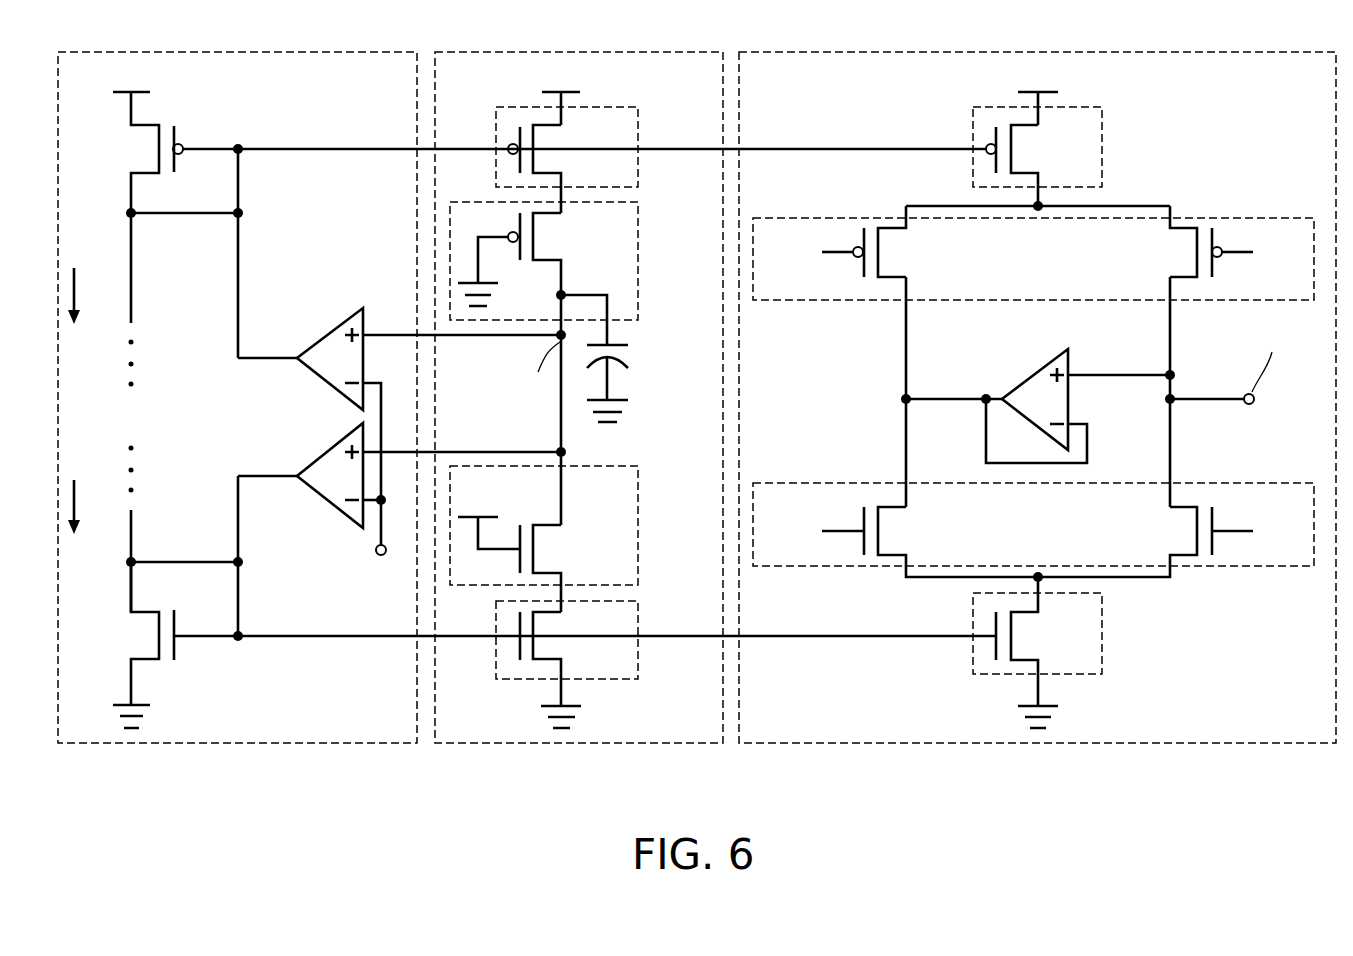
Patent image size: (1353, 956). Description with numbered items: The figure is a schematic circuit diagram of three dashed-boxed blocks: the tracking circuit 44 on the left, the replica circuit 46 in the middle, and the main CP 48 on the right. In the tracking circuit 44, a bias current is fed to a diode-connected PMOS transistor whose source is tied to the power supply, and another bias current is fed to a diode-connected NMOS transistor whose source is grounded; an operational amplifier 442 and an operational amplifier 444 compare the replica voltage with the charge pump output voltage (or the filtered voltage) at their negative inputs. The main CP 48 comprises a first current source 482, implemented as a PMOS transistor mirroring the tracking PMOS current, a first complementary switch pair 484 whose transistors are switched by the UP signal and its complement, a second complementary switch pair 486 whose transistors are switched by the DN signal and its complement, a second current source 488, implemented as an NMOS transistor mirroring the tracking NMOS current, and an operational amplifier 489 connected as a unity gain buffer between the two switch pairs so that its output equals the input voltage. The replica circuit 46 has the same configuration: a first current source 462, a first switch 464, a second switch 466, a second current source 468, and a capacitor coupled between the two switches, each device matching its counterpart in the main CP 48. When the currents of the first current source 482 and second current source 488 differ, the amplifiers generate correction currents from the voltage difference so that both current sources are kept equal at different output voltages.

The tracking circuit 44 is at (237, 743).
The replica circuit 46 is at (561, 743).
The main CP 48 is at (1038, 743).
The operational amplifier 442 is at (330, 330).
The operational amplifier 444 is at (330, 448).
The first current source 462 is at (638, 117).
The first switch 464 is at (638, 260).
The second switch 466 is at (638, 525).
The second current source 468 is at (638, 668).
The first current source 482 is at (1102, 145).
The first complementary switch pair 484 is at (1257, 218).
The second complementary switch pair 486 is at (800, 483).
The second current source 488 is at (1102, 632).
The operational amplifier 489 is at (1040, 370).